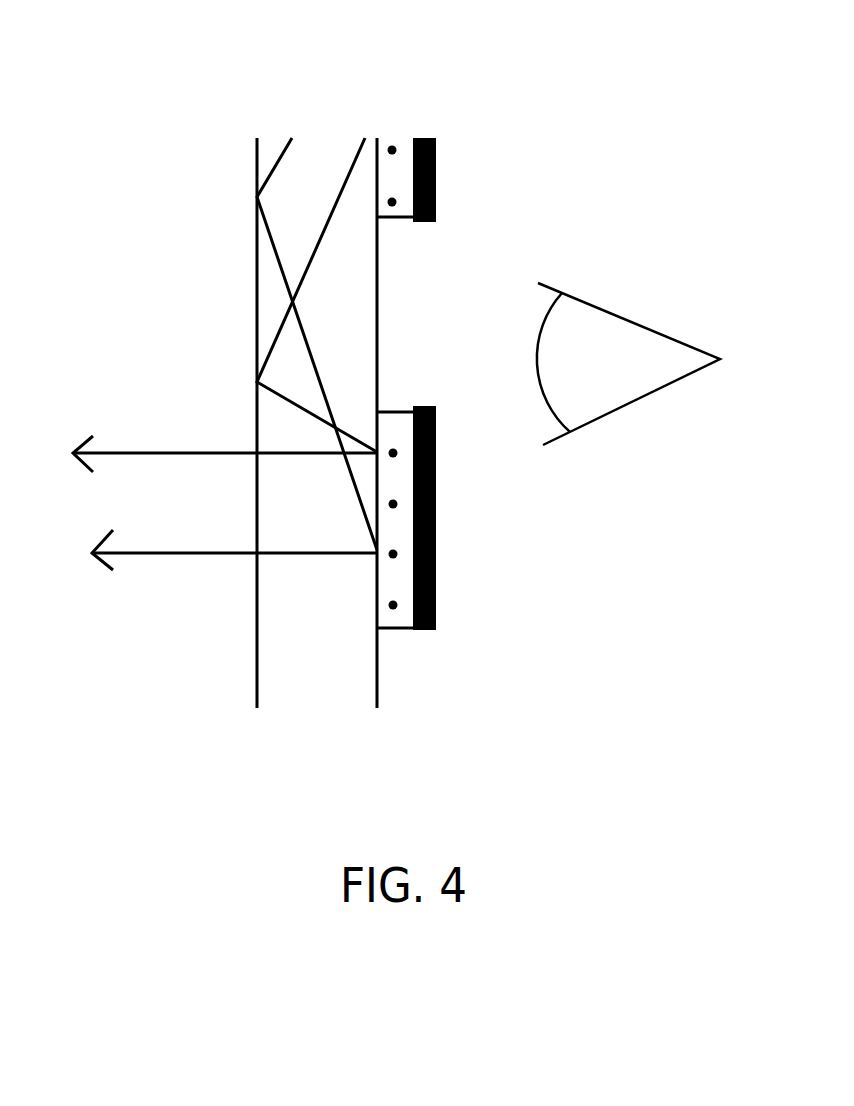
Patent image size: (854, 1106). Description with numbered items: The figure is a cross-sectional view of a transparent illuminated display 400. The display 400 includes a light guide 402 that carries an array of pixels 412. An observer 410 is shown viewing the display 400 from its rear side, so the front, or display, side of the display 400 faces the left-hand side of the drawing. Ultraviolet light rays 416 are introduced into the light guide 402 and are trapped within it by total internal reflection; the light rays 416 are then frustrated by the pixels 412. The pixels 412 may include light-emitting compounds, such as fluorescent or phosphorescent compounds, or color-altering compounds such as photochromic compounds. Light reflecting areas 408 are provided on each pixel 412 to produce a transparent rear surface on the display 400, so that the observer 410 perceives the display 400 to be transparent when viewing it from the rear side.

The transparent illuminated display 400 is at (372, 21).
The light guide 402 is at (335, 665).
The light reflecting areas 408 is at (453, 568).
The observer 410 is at (628, 364).
The pixels 412 is at (393, 619).
The ultraviolet light rays 416 is at (348, 130).